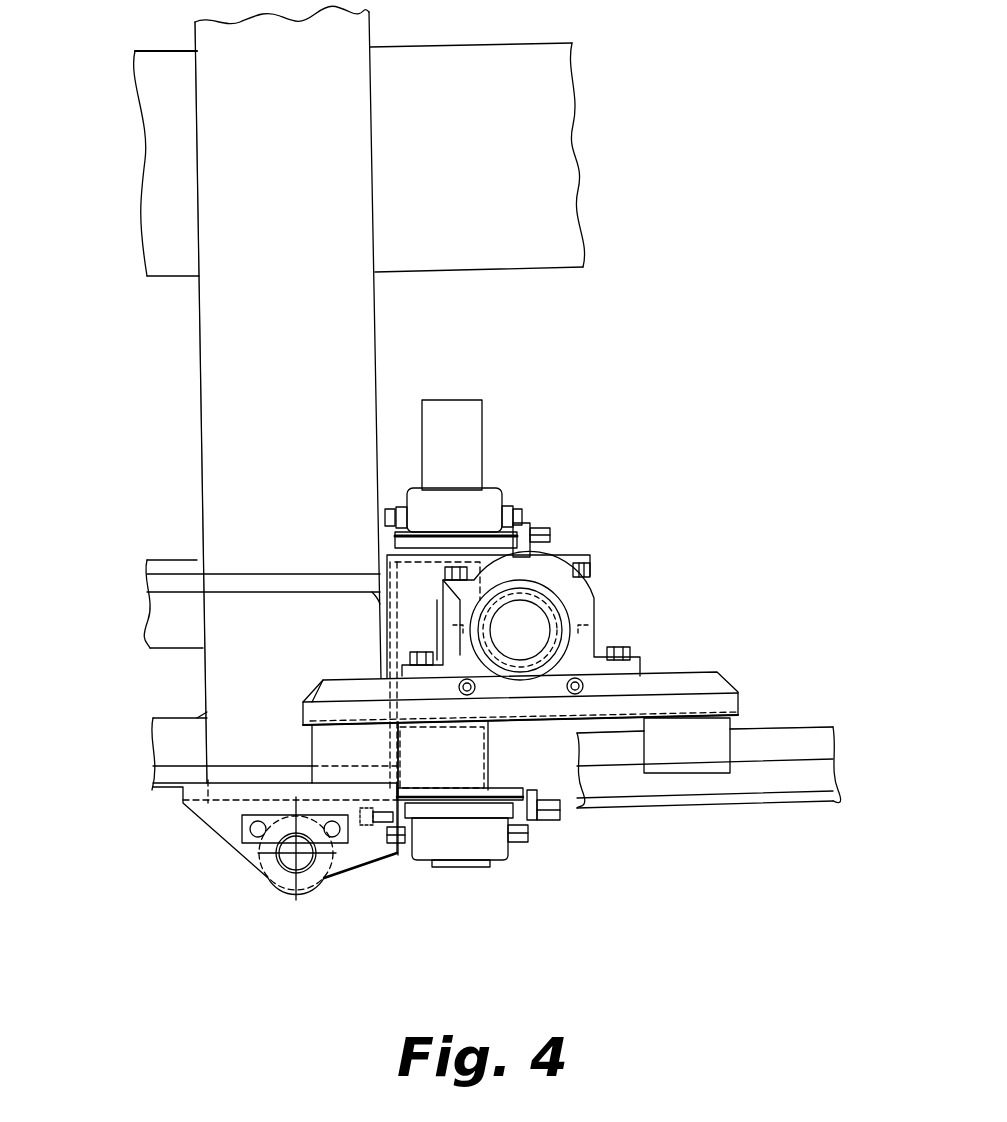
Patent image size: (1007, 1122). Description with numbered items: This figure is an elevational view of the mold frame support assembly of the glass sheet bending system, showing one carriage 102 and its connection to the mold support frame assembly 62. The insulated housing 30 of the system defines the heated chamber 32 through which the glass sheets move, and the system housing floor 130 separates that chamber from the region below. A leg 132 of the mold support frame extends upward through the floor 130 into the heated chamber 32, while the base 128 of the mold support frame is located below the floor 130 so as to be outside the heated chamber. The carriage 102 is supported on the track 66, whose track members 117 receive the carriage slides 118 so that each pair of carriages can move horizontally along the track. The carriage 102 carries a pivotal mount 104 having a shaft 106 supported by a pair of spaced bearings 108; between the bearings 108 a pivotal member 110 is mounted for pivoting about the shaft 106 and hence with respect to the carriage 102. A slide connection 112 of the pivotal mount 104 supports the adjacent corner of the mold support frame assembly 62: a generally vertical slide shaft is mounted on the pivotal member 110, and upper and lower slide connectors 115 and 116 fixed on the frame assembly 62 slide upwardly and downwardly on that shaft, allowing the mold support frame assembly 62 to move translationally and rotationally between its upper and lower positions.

The insulated housing 30 is at (147, 250).
The heated chamber 32 is at (163, 50).
The mold support frame assembly 62 is at (170, 417).
The track 66 is at (792, 708).
The carriage 102 is at (734, 668).
The pivotal mount 104 is at (607, 577).
The shaft 106 is at (535, 637).
The bearings 108 is at (583, 598).
The pivotal member 110 is at (563, 562).
The slide connection 112 is at (512, 484).
The upper slide connector 115 is at (483, 503).
The lower slide connector 116 is at (493, 848).
The track members 117 is at (773, 750).
The carriage slides 118 is at (468, 753).
The base 128 is at (175, 812).
The system housing floor 130 is at (555, 184).
The legs 132 is at (348, 373).